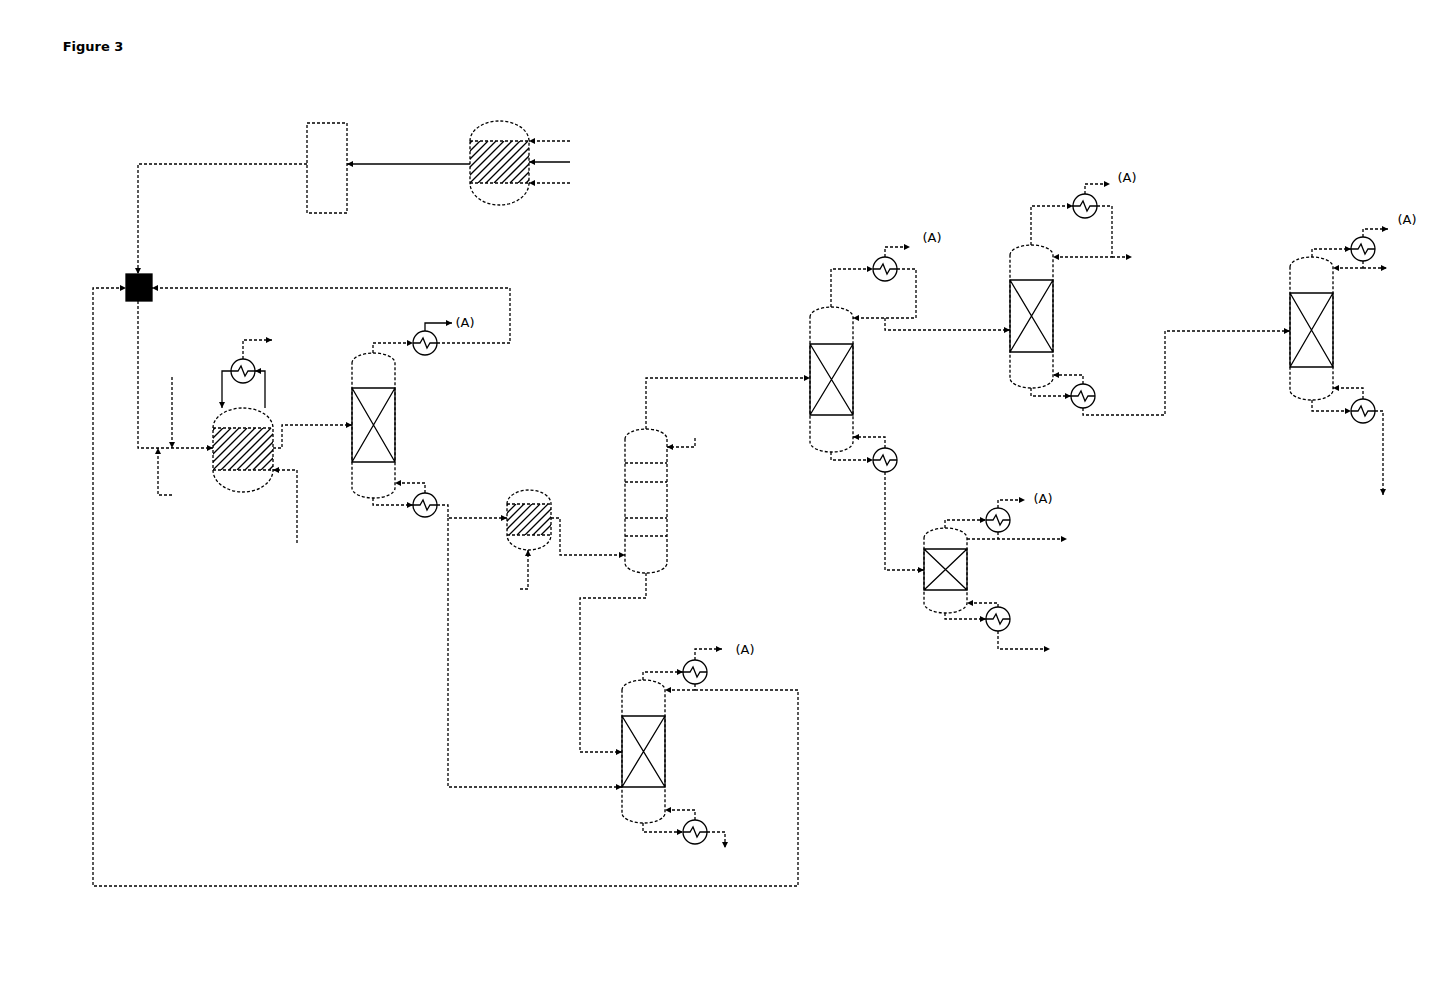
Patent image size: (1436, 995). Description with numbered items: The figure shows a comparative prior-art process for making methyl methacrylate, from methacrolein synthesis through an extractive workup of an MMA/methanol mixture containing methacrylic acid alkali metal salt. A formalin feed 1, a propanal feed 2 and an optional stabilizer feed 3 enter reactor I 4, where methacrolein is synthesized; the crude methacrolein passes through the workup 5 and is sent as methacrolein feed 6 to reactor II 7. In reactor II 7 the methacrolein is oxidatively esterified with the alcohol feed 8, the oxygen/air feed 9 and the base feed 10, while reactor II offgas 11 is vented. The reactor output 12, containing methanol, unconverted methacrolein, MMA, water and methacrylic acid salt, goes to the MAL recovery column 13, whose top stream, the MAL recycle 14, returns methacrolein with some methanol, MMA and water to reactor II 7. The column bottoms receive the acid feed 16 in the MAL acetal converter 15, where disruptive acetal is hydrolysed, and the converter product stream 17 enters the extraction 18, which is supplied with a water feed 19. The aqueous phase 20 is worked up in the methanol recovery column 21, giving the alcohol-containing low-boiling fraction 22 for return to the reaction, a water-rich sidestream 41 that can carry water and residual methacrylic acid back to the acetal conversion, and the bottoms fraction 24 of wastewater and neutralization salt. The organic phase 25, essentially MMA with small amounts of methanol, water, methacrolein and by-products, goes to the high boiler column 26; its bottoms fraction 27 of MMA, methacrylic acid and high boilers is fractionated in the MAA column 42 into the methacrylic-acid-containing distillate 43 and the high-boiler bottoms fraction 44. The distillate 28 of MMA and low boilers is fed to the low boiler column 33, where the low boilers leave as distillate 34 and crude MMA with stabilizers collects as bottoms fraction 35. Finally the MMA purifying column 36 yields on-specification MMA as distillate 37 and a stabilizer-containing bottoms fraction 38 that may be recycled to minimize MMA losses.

The formalin feed 1 is at (564, 141).
The propanal feed 2 is at (564, 162).
The optional stabilizer feed 3 is at (564, 183).
The reactor I 4 is at (499, 163).
The workup of the crude methacrolein 5 is at (327, 168).
The methacrolein feed 6 is at (222, 219).
The reactor II 7 is at (242, 425).
The alcohol feed 8 is at (172, 402).
The oxygen/air feed 9 is at (289, 516).
The base feed 10 is at (158, 482).
The reactor II offgas 11 is at (263, 338).
The reactor II reactor output 12 is at (312, 426).
The MAL recovery column 13 is at (394, 424).
The MAL recycle 14 is at (331, 303).
The MAL acetal converter 15 is at (524, 512).
The acid feed 16 is at (510, 569).
The MAL acetal converter product stream 17 is at (588, 536).
The extraction 18 is at (646, 501).
The water feed for extraction 19 is at (688, 433).
The aqueous phase 20 is at (595, 662).
The methanol recovery column 21 is at (664, 752).
The low-boiling fraction containing alcohol 22 is at (445, 587).
The bottoms fraction containing water, acid and alkali metal salts 24 is at (721, 851).
The organic phase from the extraction 25 is at (728, 393).
The high boiler column 26 is at (863, 364).
The bottoms fraction 27 is at (888, 521).
The distillate 28 is at (947, 320).
The low boiler column 33 is at (1061, 301).
The distillate from the low boiler column 34 is at (1136, 269).
The bottoms fraction from the low boiler column 35 is at (1186, 384).
The MMA purifying column 36 is at (1332, 330).
The on-specification MMA distillate 37 is at (1392, 269).
The bottoms fraction from the MMA purifying column 38 is at (1383, 467).
The methanol recovery column sidestream 41 is at (534, 663).
The MAA column 42 is at (967, 569).
The MAA column distillate 43 is at (1035, 539).
The bottoms fraction from the MAA column 44 is at (1041, 644).